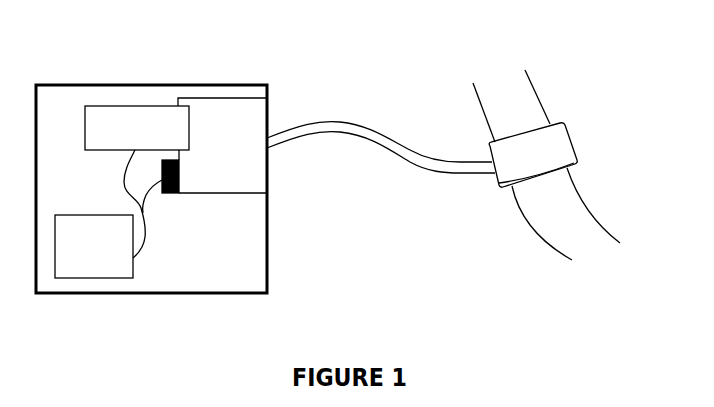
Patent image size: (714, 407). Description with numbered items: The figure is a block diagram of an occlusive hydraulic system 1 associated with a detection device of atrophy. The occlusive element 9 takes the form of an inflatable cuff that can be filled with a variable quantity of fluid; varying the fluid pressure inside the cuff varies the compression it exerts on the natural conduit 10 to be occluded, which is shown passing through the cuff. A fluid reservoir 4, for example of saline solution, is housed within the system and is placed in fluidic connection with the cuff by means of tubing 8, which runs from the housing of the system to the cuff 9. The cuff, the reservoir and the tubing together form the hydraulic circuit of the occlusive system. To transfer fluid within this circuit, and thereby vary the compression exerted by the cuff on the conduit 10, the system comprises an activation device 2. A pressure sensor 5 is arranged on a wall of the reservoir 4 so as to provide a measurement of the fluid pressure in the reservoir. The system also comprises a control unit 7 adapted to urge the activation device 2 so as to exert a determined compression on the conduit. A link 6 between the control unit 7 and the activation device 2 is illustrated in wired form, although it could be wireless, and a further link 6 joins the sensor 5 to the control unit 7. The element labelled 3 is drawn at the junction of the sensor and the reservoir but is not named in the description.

The occlusive hydraulic system 1 is at (128, 85).
The activation device 2 is at (104, 120).
The connector 3 is at (179, 175).
The fluid reservoir 4 is at (230, 180).
The pressure sensor 5 is at (170, 193).
The link 6 is at (145, 238).
The control unit 7 is at (105, 278).
The tubing 8 is at (352, 123).
The occlusive element 9 is at (570, 137).
The natural conduit 10 is at (593, 220).